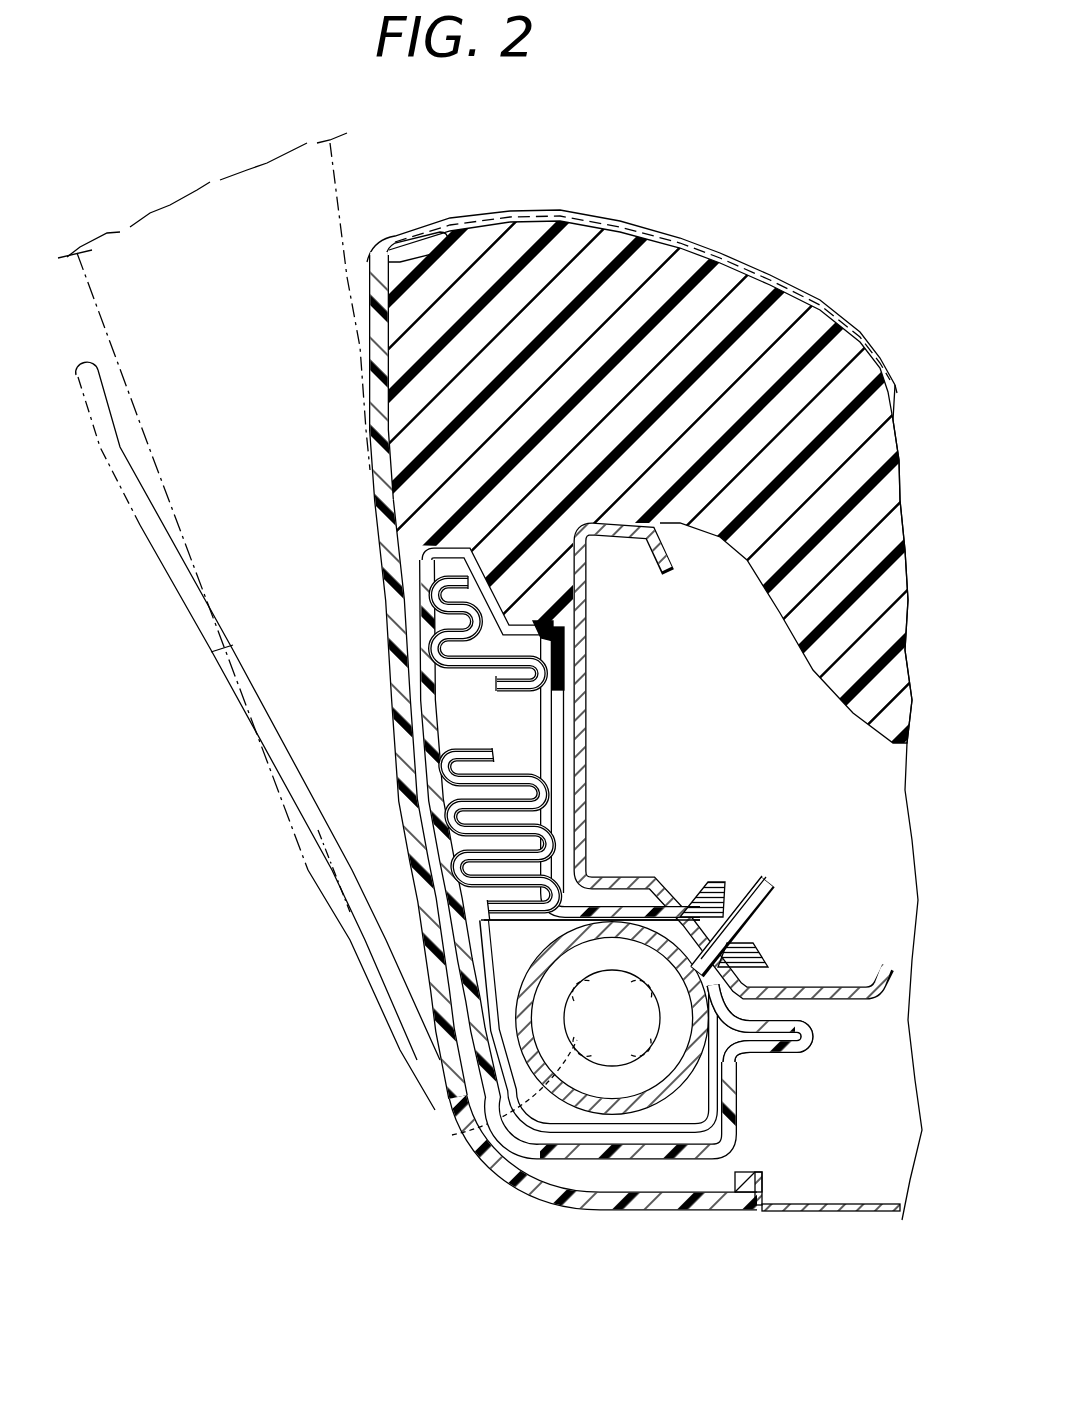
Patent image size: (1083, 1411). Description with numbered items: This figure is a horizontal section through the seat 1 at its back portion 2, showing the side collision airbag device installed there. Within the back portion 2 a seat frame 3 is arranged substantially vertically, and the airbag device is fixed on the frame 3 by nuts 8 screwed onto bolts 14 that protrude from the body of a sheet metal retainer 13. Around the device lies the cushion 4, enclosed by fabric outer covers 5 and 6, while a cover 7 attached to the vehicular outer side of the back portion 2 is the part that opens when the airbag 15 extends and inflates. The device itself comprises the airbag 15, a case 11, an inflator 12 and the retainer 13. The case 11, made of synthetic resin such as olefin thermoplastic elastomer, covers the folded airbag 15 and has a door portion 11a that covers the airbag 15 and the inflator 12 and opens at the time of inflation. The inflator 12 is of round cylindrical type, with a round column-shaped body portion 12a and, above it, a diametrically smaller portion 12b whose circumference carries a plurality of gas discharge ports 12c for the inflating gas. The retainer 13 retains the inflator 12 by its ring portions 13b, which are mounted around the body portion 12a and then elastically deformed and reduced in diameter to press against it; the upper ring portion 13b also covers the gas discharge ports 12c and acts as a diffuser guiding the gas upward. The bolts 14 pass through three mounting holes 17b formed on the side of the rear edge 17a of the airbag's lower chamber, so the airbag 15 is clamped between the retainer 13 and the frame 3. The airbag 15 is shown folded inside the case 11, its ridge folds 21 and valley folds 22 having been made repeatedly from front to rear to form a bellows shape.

The airbag module 1 is at (541, 730).
The back portion 2 is at (541, 730).
The seat frame 3 is at (588, 700).
The cushion 4 is at (783, 315).
The outer cover 5 is at (605, 225).
The outer cover 6 is at (837, 1215).
The cover 7 is at (407, 837).
The nut 8 is at (713, 882).
The case 11 is at (650, 918).
The door portion 11a is at (427, 667).
The inflator 12 is at (538, 726).
The body portion 12a is at (538, 726).
The diametrically smaller portion 12b is at (573, 1017).
The gas discharge ports 12c is at (588, 1149).
The retainer 13 is at (783, 1046).
The ring portion 13b is at (693, 1050).
The bolt 14 is at (772, 900).
The airbag 15 is at (297, 263).
The rear edge 17a is at (707, 1193).
The mounting holes 17b is at (762, 897).
The ridge fold 21 is at (430, 640).
The valley fold 22 is at (555, 835).